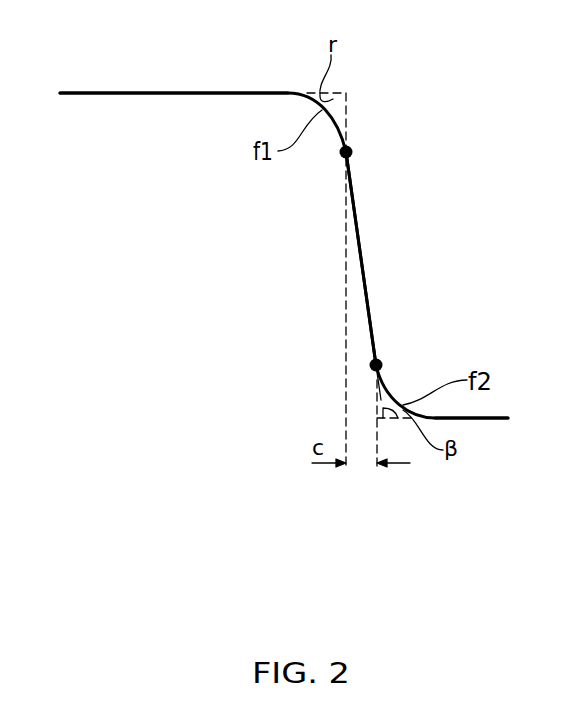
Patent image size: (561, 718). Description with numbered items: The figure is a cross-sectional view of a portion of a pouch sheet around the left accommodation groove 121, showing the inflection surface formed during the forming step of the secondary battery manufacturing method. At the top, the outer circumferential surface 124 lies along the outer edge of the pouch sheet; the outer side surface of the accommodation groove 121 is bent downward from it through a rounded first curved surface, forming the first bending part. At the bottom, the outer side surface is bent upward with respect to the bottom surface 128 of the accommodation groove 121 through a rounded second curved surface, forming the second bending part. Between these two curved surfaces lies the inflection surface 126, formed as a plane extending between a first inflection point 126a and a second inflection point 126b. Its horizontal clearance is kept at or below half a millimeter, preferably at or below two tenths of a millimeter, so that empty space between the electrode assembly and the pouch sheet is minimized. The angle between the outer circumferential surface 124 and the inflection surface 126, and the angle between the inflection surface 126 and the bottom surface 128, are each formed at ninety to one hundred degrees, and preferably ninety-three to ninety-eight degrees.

The left accommodation groove 121 is at (429, 257).
The outer circumferential surface 124 is at (176, 92).
The inflection surface 126 is at (363, 258).
The first inflection point 126a is at (352, 150).
The second inflection point 126b is at (381, 364).
The bottom surface of accommodation groove 128 is at (491, 420).